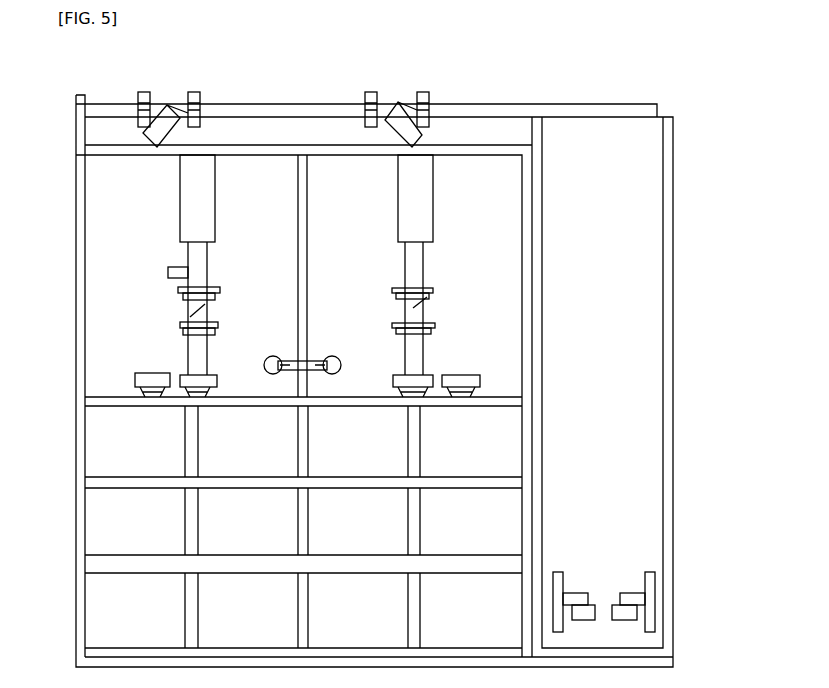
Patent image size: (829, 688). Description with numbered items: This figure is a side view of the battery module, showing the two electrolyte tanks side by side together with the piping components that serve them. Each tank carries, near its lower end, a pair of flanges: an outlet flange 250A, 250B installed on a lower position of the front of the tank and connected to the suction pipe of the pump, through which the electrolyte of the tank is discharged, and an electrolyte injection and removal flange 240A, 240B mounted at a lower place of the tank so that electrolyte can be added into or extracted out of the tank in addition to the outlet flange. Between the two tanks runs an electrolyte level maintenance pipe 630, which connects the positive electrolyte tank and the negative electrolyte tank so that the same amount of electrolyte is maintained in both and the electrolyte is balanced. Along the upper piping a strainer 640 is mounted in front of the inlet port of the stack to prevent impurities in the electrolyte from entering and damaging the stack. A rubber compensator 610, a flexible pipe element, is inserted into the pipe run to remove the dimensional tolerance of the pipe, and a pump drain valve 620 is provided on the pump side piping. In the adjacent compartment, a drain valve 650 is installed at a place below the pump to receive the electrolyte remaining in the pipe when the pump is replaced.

The rubber compensator 610 is at (432, 293).
The pump drain valve 620 is at (182, 270).
The electrolyte level maintenance pipe 630 is at (313, 360).
The strainer 640 is at (402, 103).
The drain valve 650 is at (653, 593).
The electrolyte injection/removal flange 240A is at (467, 390).
The electrolyte injection/removal flange 240B is at (137, 370).
The outlet flange 250A is at (402, 387).
The outlet flange 250B is at (212, 373).